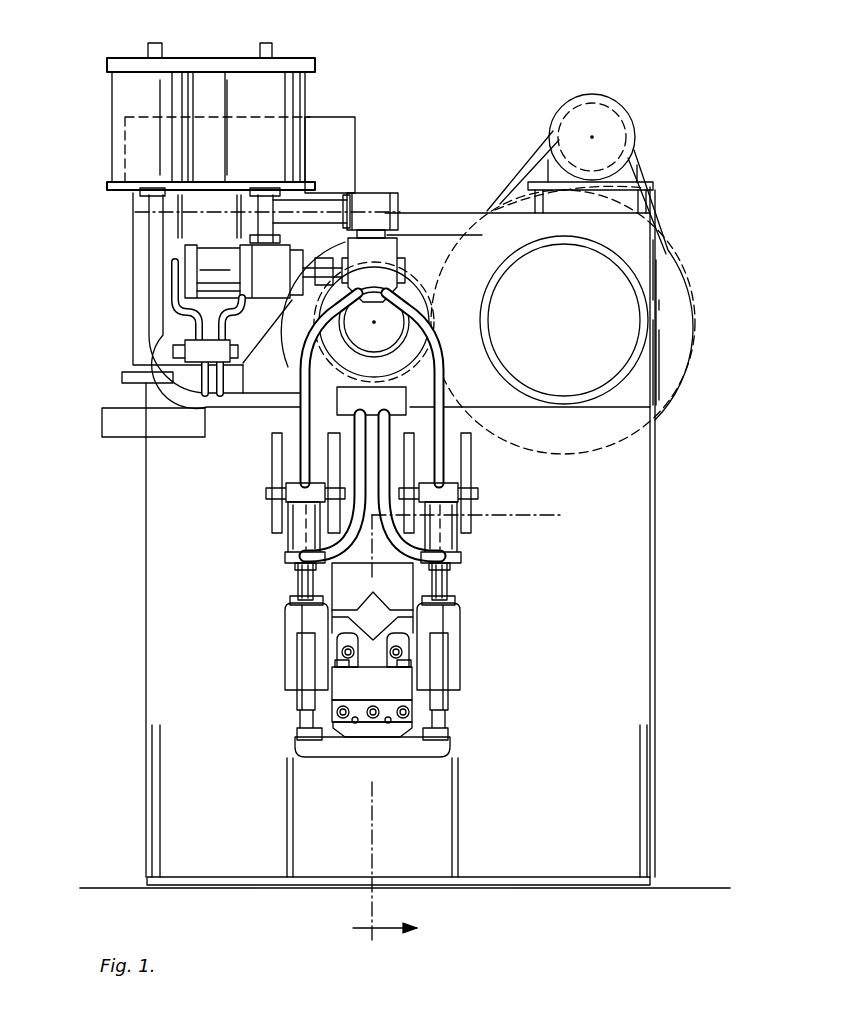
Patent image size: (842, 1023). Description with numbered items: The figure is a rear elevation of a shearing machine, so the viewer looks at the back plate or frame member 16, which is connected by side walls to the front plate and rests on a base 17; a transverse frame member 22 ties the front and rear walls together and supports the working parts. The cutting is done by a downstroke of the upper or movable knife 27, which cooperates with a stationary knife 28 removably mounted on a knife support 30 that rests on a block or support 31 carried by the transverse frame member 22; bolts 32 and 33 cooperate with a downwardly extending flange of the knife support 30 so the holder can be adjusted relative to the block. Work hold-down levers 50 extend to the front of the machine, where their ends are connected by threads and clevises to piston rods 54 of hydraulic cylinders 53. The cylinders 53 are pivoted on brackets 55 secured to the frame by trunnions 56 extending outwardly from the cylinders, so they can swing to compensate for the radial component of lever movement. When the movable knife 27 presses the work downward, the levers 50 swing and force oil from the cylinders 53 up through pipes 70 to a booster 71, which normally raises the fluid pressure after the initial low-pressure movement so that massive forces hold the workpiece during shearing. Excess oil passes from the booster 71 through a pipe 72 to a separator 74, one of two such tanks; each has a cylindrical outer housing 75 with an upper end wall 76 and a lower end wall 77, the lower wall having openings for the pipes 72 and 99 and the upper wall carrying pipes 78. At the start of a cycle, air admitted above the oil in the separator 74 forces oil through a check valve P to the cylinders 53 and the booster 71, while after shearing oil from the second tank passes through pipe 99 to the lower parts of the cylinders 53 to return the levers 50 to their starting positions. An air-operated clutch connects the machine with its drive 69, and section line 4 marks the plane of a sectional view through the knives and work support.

The back plate or frame member 16 is at (632, 575).
The base 17 is at (560, 888).
The transverse frame member 22 is at (386, 748).
The upper or movable knife 27 is at (360, 592).
The stationary knife 28 is at (408, 622).
The knife support 30 is at (388, 684).
The block or support 31 is at (348, 735).
The bolt 32 is at (409, 714).
The bolt 33 is at (391, 737).
The section line 4 is at (464, 740).
The lever 50 is at (496, 646).
The hydraulic cylinder 53 is at (492, 544).
The piston rod 54 is at (491, 583).
The bracket 55 is at (490, 448).
The trunnion 56 is at (510, 482).
The drive 69 is at (682, 230).
The pipe 70 is at (461, 374).
The booster 71 is at (228, 228).
The pipe 72 is at (268, 228).
The separator 74 is at (298, 138).
The outer housing 75 is at (323, 85).
The upper end wall 76 is at (125, 62).
The lower end wall 77 is at (110, 185).
The pipe 78 is at (266, 21).
The pipe 99 is at (152, 297).
The check valve P is at (413, 198).